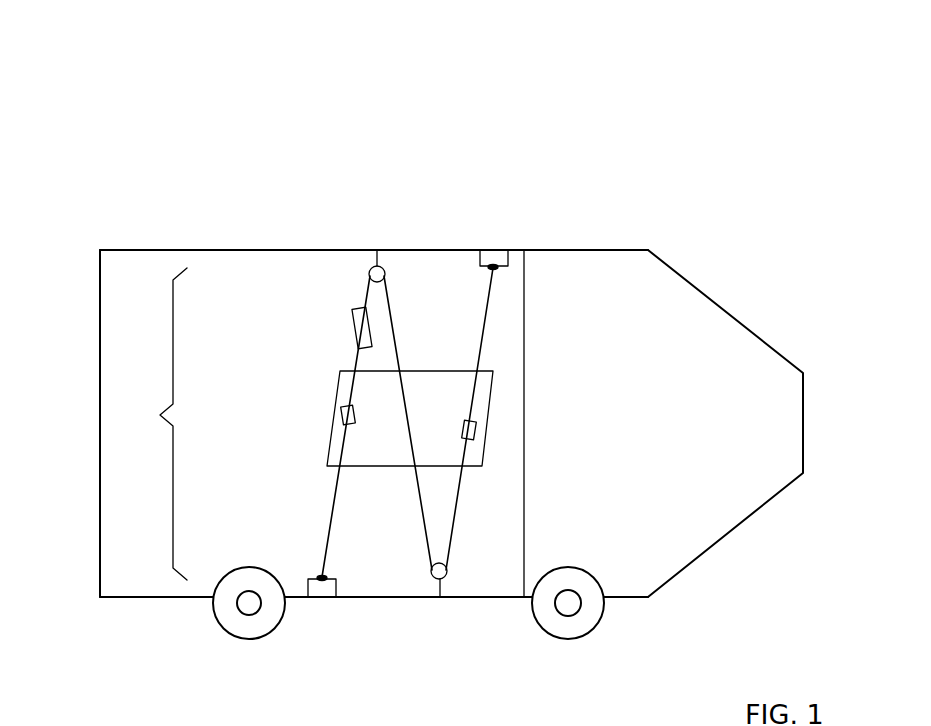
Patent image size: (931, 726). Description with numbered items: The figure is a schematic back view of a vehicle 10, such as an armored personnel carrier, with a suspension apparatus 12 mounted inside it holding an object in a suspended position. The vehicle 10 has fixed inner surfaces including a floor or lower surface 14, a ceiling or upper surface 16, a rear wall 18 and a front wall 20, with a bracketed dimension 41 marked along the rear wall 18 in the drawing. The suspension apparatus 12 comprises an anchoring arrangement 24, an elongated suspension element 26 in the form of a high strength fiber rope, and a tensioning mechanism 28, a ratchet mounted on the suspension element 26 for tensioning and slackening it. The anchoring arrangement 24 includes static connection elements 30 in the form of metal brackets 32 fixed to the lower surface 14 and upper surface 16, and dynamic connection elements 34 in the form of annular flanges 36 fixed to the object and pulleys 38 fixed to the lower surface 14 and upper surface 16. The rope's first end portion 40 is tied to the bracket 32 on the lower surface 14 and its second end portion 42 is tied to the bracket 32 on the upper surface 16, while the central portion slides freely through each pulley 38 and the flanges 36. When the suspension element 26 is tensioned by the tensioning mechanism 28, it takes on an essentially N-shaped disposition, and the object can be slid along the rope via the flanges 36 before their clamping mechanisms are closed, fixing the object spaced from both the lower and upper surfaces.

The vehicle 10 is at (187, 190).
The suspension apparatus 12 is at (342, 315).
The lower surface 14 is at (157, 598).
The upper surface 16 is at (132, 250).
The rear wall 18 is at (100, 422).
The front wall 20 is at (525, 330).
The anchoring arrangement 24 is at (355, 437).
The suspension element 26 is at (395, 320).
The tensioning mechanism 28 is at (356, 326).
The static connection elements 30 is at (510, 250).
The brackets 32 is at (477, 255).
The dynamic connection elements 34 is at (386, 250).
The flanges 36 is at (340, 420).
The pulleys 38 is at (365, 268).
The first end portion 40 is at (322, 577).
The cargo area height 41 is at (154, 424).
The second end portion 42 is at (493, 268).